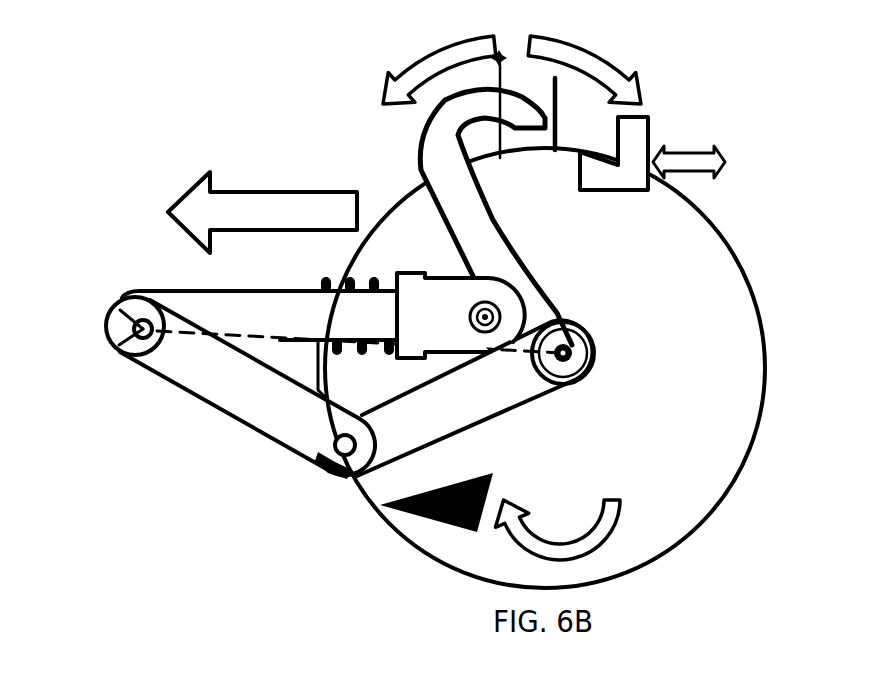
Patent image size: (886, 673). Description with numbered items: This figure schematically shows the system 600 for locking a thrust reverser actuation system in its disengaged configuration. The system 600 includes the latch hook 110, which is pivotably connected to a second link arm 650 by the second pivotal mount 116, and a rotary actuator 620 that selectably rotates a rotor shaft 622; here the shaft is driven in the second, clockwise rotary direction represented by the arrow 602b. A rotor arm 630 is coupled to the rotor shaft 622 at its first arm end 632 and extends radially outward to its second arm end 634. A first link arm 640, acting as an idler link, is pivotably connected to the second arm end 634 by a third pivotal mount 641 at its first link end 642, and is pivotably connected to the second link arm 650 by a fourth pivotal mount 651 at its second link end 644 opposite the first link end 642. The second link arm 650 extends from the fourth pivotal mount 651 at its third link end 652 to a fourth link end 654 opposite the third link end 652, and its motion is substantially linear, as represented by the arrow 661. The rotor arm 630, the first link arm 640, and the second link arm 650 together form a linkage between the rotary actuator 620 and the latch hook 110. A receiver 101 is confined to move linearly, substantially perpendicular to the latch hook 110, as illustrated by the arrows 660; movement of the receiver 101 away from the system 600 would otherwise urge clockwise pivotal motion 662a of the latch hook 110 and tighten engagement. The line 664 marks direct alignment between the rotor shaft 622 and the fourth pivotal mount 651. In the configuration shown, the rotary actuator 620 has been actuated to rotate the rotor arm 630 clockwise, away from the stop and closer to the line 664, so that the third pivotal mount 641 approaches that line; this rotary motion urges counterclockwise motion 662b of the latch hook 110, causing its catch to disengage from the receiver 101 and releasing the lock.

The system 600 is at (100, 66).
The receiver 101 is at (648, 128).
The latch hook 110 is at (497, 218).
The second pivotal mount 116 is at (500, 310).
The rotary actuator 620 is at (768, 352).
The rotor shaft 622 is at (573, 358).
The rotor arm 630 is at (510, 413).
The first arm end 632 is at (564, 407).
The second arm end 634 is at (346, 500).
The first link arm 640 is at (230, 415).
The third pivotal mount 641 is at (336, 443).
The first link end 642 is at (298, 466).
The second link end 644 is at (86, 332).
The second link arm 650 is at (250, 290).
The fourth pivotal mount 651 is at (133, 326).
The third link end 652 is at (125, 282).
The fourth link end 654 is at (418, 258).
The arrows 660 is at (712, 178).
The arrow 661 is at (230, 192).
The arrow 662a is at (602, 58).
The counterclockwise motion 662b is at (418, 60).
The line 664 is at (158, 330).
The arrow 602b is at (617, 527).